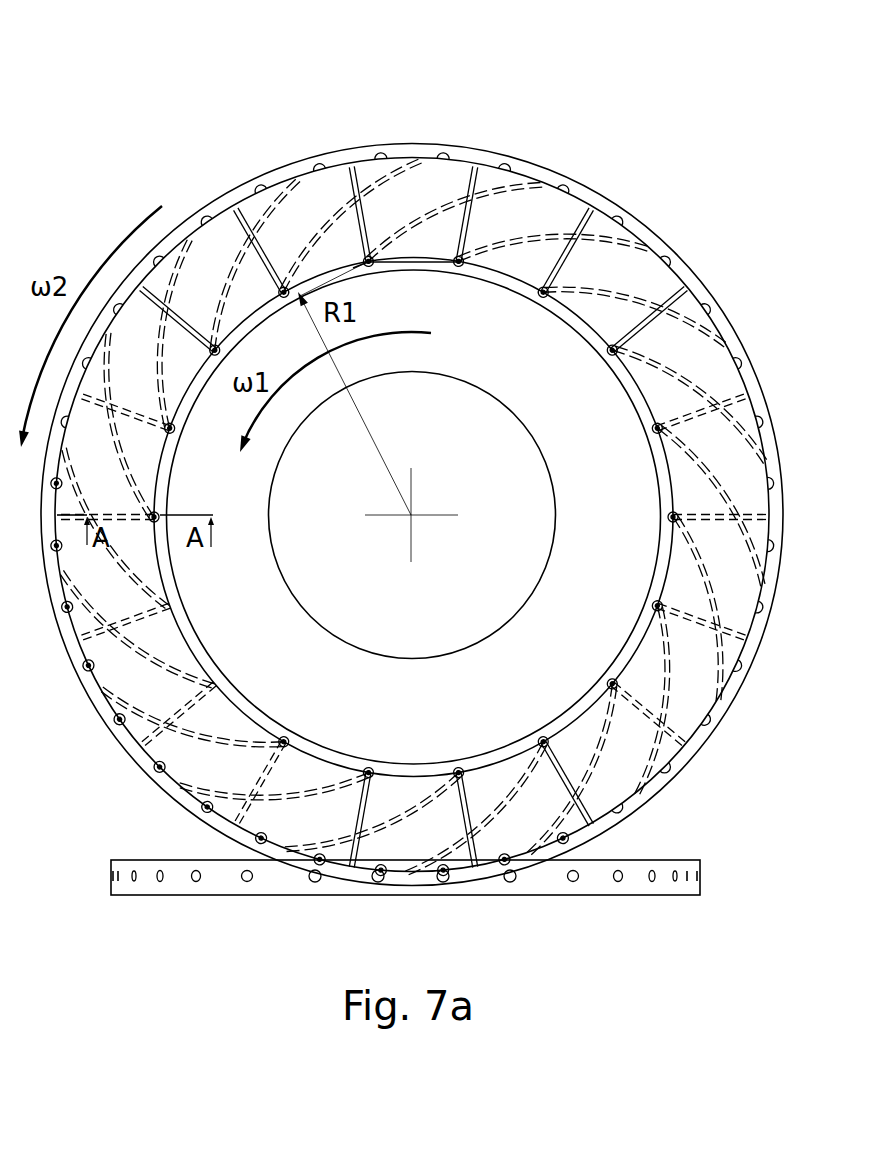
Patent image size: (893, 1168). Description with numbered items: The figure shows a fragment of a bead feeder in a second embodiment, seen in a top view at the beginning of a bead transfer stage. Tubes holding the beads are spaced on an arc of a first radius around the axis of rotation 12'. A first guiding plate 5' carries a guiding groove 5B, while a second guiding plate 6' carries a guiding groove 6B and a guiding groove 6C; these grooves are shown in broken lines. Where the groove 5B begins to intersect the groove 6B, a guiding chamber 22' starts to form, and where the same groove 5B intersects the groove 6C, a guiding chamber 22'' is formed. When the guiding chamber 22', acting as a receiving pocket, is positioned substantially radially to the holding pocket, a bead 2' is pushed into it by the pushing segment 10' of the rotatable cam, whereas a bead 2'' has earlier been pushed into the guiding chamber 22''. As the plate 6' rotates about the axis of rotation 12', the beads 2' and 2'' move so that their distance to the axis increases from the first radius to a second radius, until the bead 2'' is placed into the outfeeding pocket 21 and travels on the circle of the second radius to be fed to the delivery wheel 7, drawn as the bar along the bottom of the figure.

The guiding chamber 22'' is at (307, 147).
The guiding groove 5B is at (368, 262).
The bead 2'' is at (406, 137).
The guiding groove 6C is at (371, 258).
The bead 2' is at (413, 433).
The guiding groove 6B is at (500, 195).
The first guiding plate 5' is at (581, 207).
The second guiding plate 6' is at (412, 515).
The notch 21 is at (713, 302).
The guiding chamber 22' is at (413, 424).
The pushing segment 10' is at (413, 477).
The axis of rotation 12' is at (290, 595).
The delivery wheel 7 is at (208, 883).